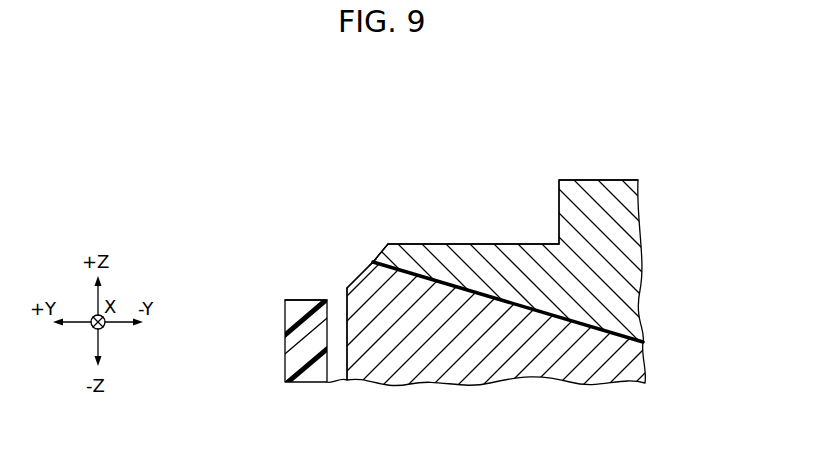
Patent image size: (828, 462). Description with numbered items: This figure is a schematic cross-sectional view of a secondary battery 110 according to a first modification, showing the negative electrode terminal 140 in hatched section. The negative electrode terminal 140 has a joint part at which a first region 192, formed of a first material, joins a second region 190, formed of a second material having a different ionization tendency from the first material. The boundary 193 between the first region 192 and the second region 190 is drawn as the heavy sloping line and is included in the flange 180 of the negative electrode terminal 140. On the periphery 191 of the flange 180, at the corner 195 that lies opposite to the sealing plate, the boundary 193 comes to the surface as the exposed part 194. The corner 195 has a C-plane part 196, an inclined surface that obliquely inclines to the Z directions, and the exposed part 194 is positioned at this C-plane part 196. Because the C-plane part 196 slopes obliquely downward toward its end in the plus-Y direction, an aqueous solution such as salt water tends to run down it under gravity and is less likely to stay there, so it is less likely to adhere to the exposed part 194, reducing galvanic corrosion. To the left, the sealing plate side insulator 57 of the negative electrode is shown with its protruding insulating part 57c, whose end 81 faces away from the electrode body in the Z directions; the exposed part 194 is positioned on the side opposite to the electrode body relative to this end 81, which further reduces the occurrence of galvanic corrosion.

The secondary battery 110 is at (553, 136).
The negative electrode terminal 140 is at (617, 177).
The flange 180 is at (472, 242).
The first region 192 is at (528, 260).
The boundary 193 is at (602, 327).
The second region 190 is at (538, 366).
The periphery 191 is at (347, 364).
The exposed part 194 is at (370, 262).
The corner 195 is at (356, 276).
The C-plane part 196 is at (366, 264).
The sealing plate side insulator 57 is at (276, 323).
The protruding insulating part 57c is at (286, 359).
The end 81 is at (302, 300).